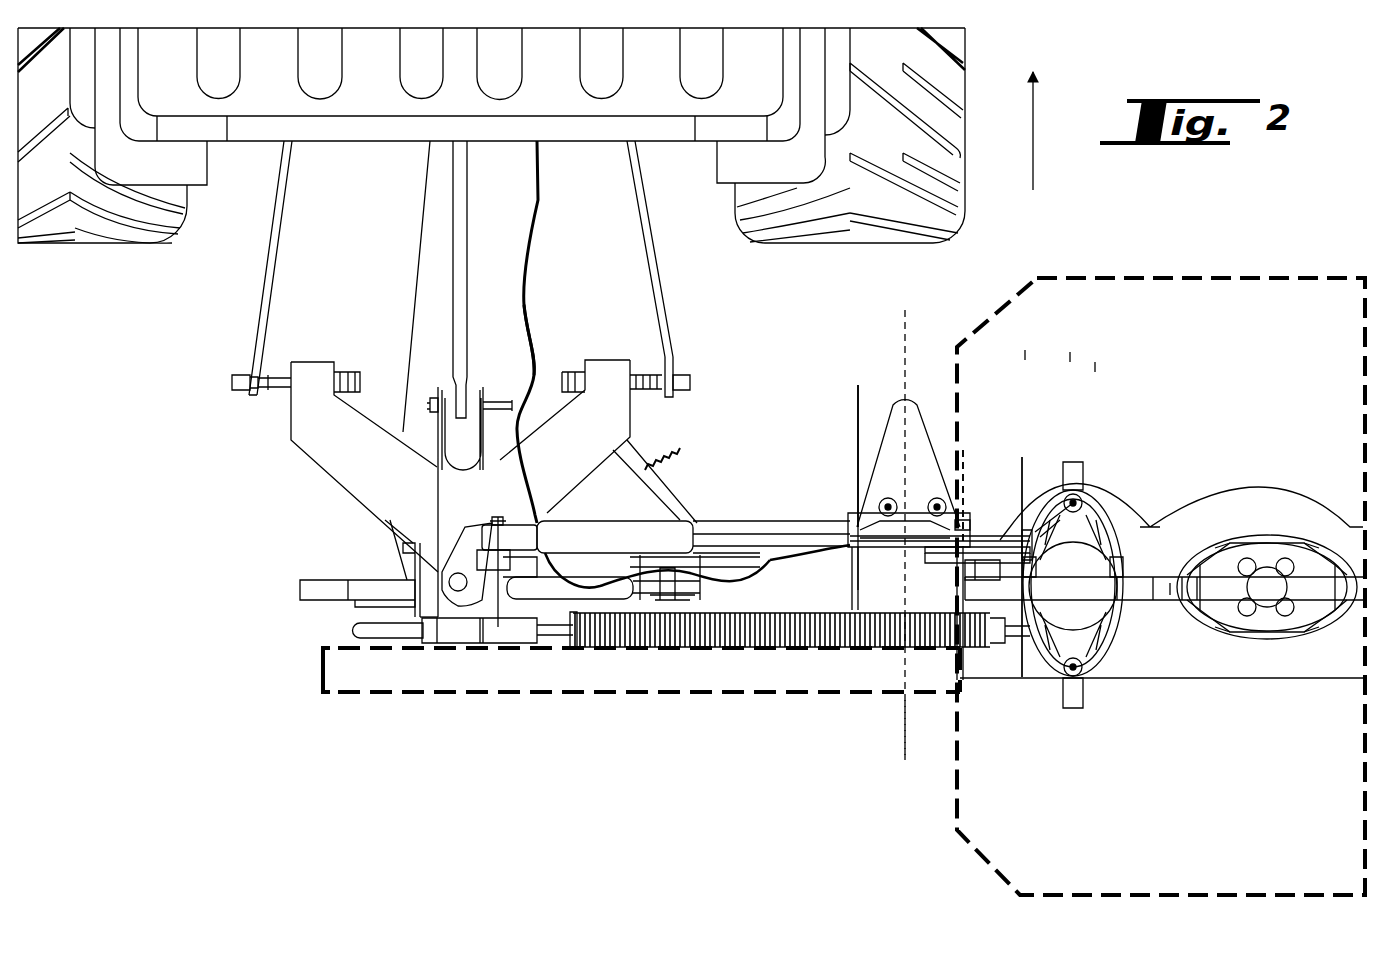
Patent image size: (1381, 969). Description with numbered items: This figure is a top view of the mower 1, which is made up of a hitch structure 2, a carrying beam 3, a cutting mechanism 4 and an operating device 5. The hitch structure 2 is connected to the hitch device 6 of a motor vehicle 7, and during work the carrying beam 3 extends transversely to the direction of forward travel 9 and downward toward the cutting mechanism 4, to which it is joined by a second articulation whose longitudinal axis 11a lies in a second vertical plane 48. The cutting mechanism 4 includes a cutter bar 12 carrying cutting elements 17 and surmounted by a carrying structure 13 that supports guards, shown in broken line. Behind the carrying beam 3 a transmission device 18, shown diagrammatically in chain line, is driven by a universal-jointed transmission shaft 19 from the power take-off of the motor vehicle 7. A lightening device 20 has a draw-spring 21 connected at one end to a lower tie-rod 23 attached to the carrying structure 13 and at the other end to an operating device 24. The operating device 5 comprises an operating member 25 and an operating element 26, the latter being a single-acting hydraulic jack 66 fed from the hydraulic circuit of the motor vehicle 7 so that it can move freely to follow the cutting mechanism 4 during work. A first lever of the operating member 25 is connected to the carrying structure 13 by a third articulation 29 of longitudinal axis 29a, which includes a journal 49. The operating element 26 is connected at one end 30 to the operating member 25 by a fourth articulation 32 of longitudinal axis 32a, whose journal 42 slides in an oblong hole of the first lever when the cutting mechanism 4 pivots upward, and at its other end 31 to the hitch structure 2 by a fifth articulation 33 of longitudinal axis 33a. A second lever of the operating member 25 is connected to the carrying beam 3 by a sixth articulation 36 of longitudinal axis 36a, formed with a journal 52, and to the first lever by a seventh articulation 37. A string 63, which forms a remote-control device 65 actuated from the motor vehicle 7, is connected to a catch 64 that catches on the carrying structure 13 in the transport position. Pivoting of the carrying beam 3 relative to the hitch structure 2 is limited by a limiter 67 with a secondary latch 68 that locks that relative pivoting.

The mower 1 is at (1246, 276).
The hitch structure 2 is at (330, 486).
The carrying beam 3 is at (770, 603).
The cutting mechanism 4 is at (1284, 487).
The operating device 5 is at (1104, 359).
The hitch device 6 is at (260, 305).
The motor vehicle 7 is at (971, 221).
The direction of forward travel 9 is at (1036, 142).
The longitudinal axis of second articulation 11a is at (900, 386).
The cutter bar 12 is at (1245, 670).
The carrying structure 13 is at (1163, 594).
The cutting elements 17 is at (1217, 541).
The transmission device 18 is at (641, 694).
The universal-jointed transmission shaft 19 is at (423, 288).
The lightening device 20 is at (790, 652).
The draw-spring 21 is at (826, 650).
The lower tie-rod 23 is at (1022, 682).
The operating device 24 is at (450, 652).
The operating member 25 is at (1076, 348).
The operating element 26 is at (641, 519).
The third articulation 29 is at (1041, 531).
The longitudinal axis of third articulation 29a is at (1022, 473).
The end of operating element 30 is at (1032, 346).
The end of operating element 31 is at (578, 519).
The fourth articulation 32 is at (968, 507).
The longitudinal axis of fourth articulation 32a is at (961, 450).
The fifth articulation 33 is at (512, 518).
The longitudinal axis of fifth articulation 33a is at (498, 513).
The sixth articulation 36 is at (868, 505).
The longitudinal axis of sixth articulation 36a is at (857, 425).
The seventh articulation 37 is at (947, 556).
The journal 42 is at (952, 513).
The second vertical plane 48 is at (905, 735).
The journal 49 is at (1023, 538).
The journal 52 is at (857, 513).
The string 63 is at (530, 324).
The catch 64 is at (750, 545).
The remote-control device 65 is at (545, 213).
The single-acting hydraulic jack 66 is at (718, 530).
The limiter 67 is at (555, 600).
The secondary latch 68 is at (720, 650).